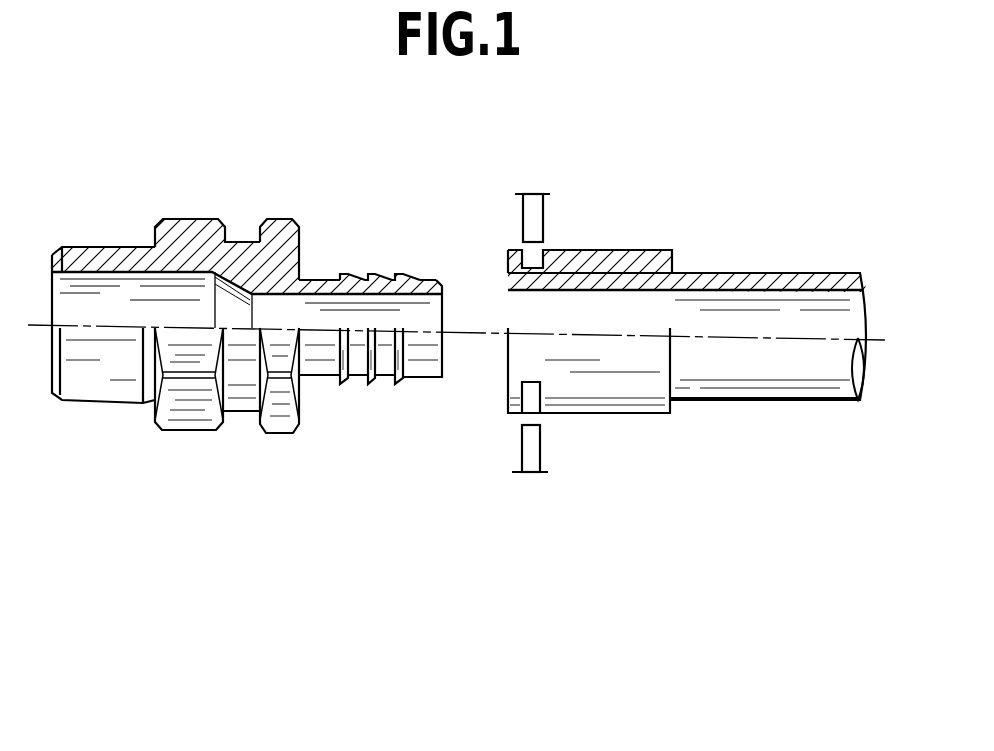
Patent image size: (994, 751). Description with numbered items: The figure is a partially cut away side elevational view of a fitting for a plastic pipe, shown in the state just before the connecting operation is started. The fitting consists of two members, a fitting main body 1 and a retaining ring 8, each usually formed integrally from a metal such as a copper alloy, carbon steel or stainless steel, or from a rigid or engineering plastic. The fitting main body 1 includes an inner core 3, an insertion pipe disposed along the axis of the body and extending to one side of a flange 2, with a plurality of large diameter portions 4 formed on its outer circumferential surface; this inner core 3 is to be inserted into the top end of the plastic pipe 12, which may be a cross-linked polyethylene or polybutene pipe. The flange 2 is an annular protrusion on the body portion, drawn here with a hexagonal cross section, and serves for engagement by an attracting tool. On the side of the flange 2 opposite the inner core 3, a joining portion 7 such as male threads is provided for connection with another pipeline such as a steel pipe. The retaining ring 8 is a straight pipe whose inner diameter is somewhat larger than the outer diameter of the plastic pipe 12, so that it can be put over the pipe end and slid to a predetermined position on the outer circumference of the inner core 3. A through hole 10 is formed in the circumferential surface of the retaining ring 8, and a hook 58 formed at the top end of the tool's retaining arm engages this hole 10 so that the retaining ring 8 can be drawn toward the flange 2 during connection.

The fitting main body 1 is at (190, 418).
The flange 2 is at (278, 427).
The inner core 3 is at (430, 380).
The large diameter portions 4 is at (371, 273).
The joining portion 7 is at (102, 403).
The retaining ring 8 is at (645, 409).
The through hole 10 is at (533, 253).
The plastic pipe 12 is at (795, 387).
The hook 58 is at (533, 194).